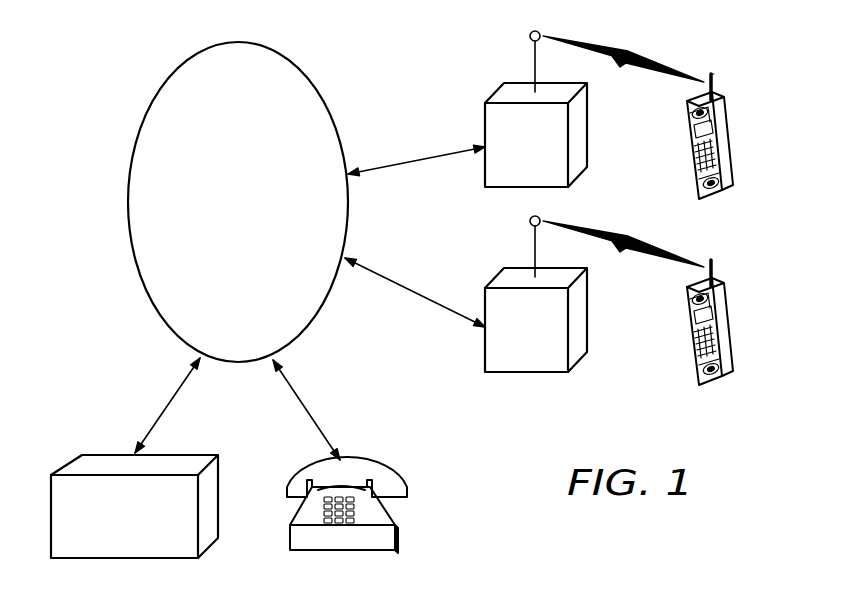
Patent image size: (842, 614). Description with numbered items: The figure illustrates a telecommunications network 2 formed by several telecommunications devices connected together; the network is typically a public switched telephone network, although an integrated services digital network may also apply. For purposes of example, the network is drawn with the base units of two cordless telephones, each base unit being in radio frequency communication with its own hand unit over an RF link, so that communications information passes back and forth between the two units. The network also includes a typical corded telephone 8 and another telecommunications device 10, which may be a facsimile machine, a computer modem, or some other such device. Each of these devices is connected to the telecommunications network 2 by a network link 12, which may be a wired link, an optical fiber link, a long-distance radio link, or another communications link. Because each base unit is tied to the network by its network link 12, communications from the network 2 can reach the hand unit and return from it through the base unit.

The telecommunications network 2 is at (125, 45).
The corded telephone 8 is at (408, 487).
The telecommunications device 10 is at (92, 452).
The network link 12 is at (417, 159).